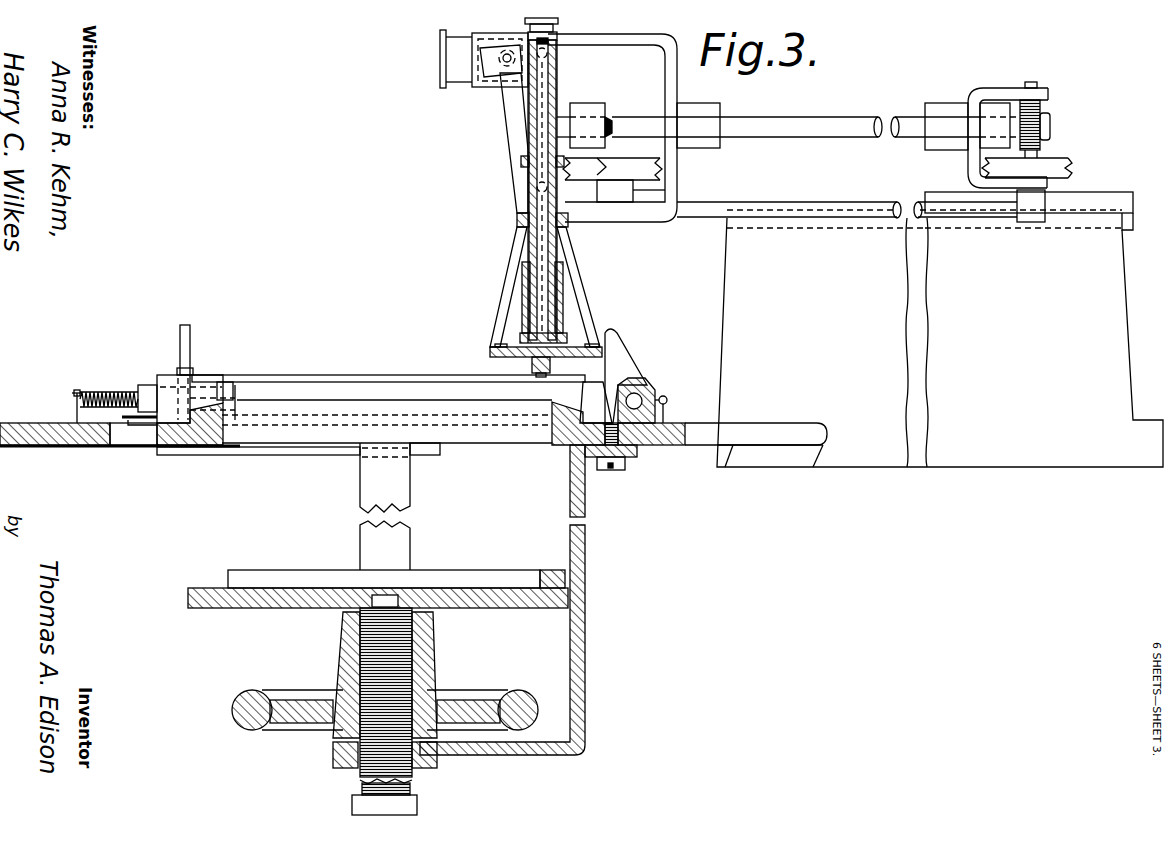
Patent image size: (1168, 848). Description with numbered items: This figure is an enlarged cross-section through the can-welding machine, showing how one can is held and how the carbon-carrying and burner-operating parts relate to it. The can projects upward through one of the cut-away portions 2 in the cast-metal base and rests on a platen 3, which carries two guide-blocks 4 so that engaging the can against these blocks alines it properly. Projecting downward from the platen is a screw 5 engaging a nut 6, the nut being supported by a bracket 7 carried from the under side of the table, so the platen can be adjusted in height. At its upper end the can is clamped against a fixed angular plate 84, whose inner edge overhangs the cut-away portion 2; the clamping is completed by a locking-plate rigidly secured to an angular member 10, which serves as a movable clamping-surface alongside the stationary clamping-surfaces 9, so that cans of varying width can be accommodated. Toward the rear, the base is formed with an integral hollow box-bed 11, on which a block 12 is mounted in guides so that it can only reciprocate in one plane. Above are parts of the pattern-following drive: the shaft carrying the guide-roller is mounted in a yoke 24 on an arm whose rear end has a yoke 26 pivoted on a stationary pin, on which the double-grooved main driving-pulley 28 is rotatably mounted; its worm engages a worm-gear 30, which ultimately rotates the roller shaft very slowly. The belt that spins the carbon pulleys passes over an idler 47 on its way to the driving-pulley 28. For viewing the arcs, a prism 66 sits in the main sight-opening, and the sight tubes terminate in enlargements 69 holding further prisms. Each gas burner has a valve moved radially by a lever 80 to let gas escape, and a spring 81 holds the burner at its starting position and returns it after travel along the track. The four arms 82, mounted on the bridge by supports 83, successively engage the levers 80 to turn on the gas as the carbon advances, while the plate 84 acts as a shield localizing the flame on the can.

The cut-away portions 2 is at (327, 434).
The platen 3 is at (192, 610).
The guide-blocks 4 is at (278, 578).
The screw 5 is at (417, 803).
The nut 6 is at (519, 690).
The bracket 7 is at (398, 554).
The stationary clamping-surfaces 9 is at (478, 433).
The angular members 10 is at (222, 428).
The hollow box-bed 11 is at (924, 338).
The block 12 is at (1123, 195).
The yoke 24 is at (623, 44).
The yoke 26 is at (997, 96).
The main driving-pulley 28 is at (1057, 164).
The worm-gear 30 is at (1050, 108).
The idler 47 is at (660, 170).
The prism 66 is at (442, 64).
The enlargements 69 is at (489, 50).
The lever 80 is at (629, 370).
The spring 81 is at (112, 392).
The arms 82 is at (505, 362).
The supports 83 is at (503, 292).
The fixed angular plates 84 is at (258, 380).